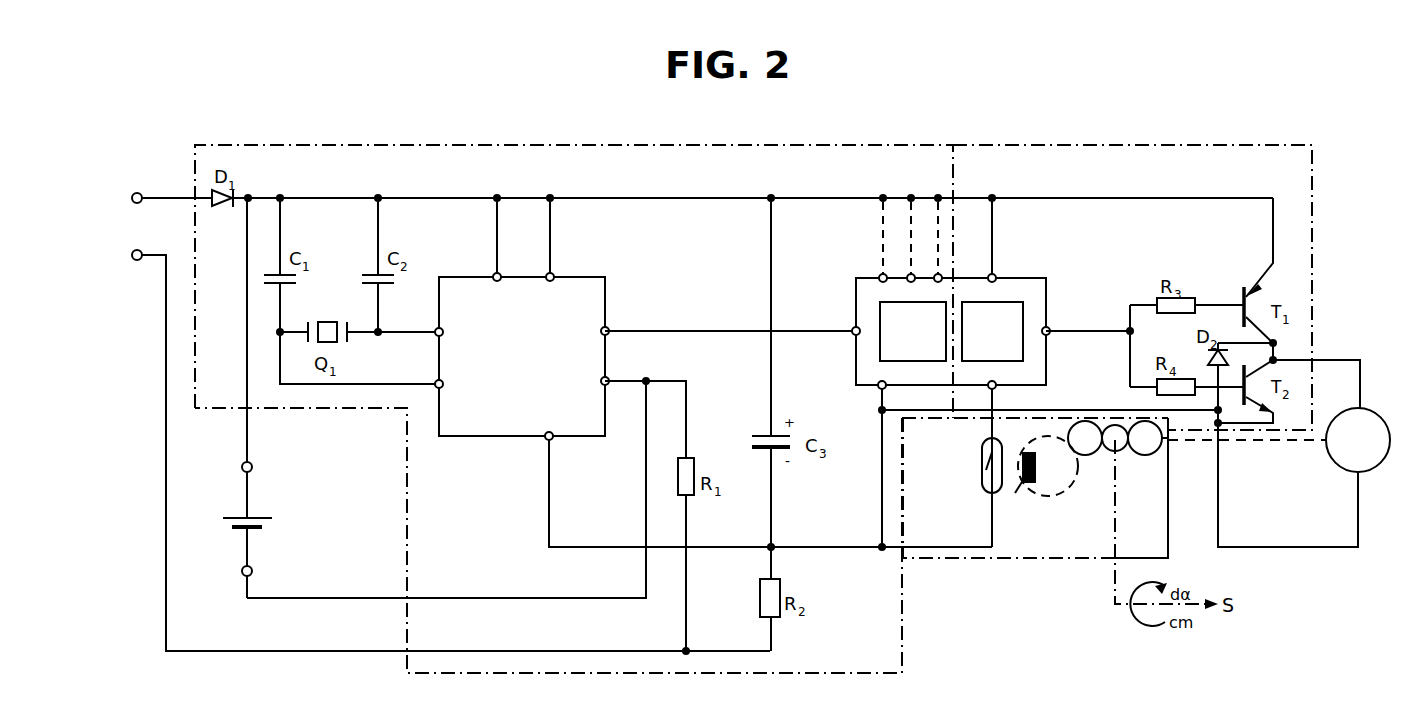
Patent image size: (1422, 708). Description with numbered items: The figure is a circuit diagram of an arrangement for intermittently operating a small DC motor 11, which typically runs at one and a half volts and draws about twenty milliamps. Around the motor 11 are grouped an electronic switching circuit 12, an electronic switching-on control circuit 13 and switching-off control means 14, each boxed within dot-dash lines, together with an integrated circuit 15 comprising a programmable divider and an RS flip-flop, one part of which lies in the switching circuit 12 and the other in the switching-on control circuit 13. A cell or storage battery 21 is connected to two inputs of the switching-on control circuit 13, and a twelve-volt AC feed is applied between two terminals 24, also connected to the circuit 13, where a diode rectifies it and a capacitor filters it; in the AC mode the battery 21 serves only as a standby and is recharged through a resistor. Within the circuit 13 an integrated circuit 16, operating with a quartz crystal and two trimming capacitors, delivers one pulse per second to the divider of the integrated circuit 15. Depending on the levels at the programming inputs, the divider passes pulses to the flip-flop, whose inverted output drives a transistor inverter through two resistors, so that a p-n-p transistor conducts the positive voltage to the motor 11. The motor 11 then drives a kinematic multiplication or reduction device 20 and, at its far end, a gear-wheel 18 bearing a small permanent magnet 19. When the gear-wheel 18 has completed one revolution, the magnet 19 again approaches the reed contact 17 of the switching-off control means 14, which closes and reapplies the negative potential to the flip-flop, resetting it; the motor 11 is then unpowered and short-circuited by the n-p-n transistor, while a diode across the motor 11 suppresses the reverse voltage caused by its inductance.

The DC motor 11 is at (1378, 456).
The electronic switching circuit 12 is at (1313, 192).
The switching-on control circuit 13 is at (457, 146).
The switching-off control means 14 is at (1172, 502).
The integrated circuit 15 is at (1030, 290).
The integrated circuit 16 is at (573, 291).
The reed contact 17 is at (982, 451).
The gear-wheel 18 is at (1078, 476).
The permanent magnet 19 is at (1033, 453).
The kinematic multiplication or reduction device 20 is at (1118, 452).
The cell or storage battery 21 is at (279, 398).
The terminals 24 is at (439, 409).